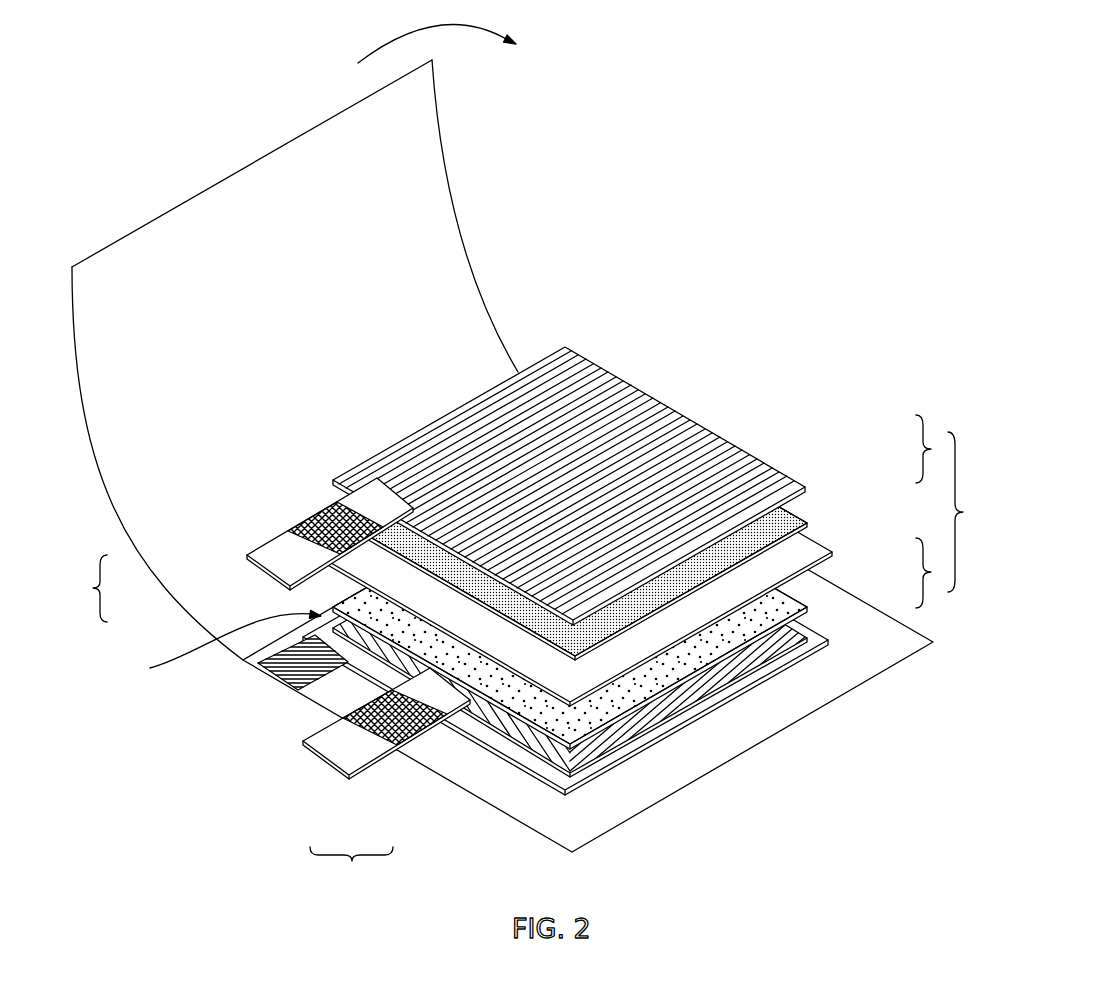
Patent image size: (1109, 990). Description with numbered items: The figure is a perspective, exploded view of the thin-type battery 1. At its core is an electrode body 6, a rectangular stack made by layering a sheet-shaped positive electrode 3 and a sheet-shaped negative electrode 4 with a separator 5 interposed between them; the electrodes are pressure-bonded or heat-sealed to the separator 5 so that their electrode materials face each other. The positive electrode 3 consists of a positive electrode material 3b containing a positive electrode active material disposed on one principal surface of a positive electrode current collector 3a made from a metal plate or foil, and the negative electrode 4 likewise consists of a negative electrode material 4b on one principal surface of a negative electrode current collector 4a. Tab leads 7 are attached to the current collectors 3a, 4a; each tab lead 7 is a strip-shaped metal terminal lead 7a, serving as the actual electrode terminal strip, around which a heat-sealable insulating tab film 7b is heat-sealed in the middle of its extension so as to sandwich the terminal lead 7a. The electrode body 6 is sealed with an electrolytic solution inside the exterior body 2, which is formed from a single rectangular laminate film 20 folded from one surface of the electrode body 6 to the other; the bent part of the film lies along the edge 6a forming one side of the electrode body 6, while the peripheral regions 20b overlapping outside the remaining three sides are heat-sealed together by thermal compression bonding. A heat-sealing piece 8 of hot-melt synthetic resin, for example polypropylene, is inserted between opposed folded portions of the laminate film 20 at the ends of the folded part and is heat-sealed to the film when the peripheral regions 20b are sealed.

The thin-type battery 1 is at (758, 238).
The exterior body 2 is at (453, 276).
The laminate film 20 is at (502, 438).
The peripheral regions 20b is at (790, 708).
The positive electrode 3 is at (640, 503).
The positive electrode current collector 3a is at (767, 485).
The positive electrode material 3b is at (797, 513).
The negative electrode 4 is at (640, 623).
The negative electrode current collector 4a is at (777, 603).
The negative electrode material 4b is at (793, 623).
The separator 5 is at (805, 545).
The electrode body 6 is at (552, 562).
The edge 6a is at (222, 646).
The tab lead 7 is at (274, 683).
The terminal lead 7a is at (282, 562).
The tab film 7b is at (296, 520).
The heat-sealing piece 8 is at (290, 663).